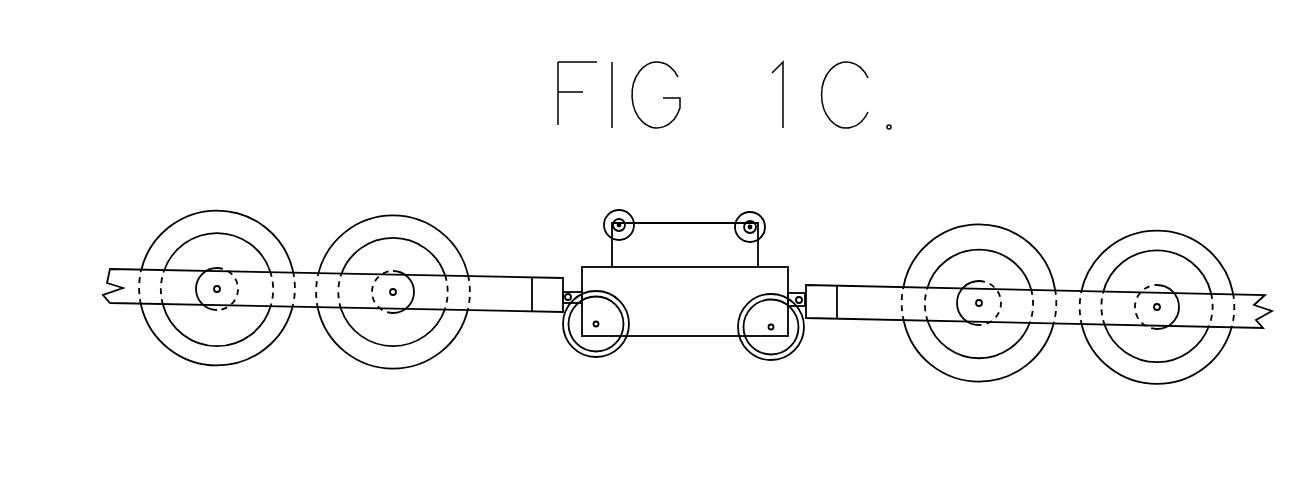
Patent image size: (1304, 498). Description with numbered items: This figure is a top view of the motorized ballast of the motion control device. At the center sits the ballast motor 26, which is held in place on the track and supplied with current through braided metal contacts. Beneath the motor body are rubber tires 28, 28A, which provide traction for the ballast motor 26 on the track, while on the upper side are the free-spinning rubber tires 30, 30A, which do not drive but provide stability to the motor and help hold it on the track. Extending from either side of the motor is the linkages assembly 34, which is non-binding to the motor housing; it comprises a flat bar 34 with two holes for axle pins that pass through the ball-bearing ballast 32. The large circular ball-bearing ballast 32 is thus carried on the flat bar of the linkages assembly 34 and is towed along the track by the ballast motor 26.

The ballast motor 26 is at (660, 220).
The rubber tire 28 is at (591, 358).
The rubber tire 28A is at (773, 362).
The free-spinning tire 30 is at (613, 208).
The free-spinning tire 30A is at (758, 209).
The ball-bearing ballast 32 is at (990, 221).
The linkages assembly 34 is at (845, 282).